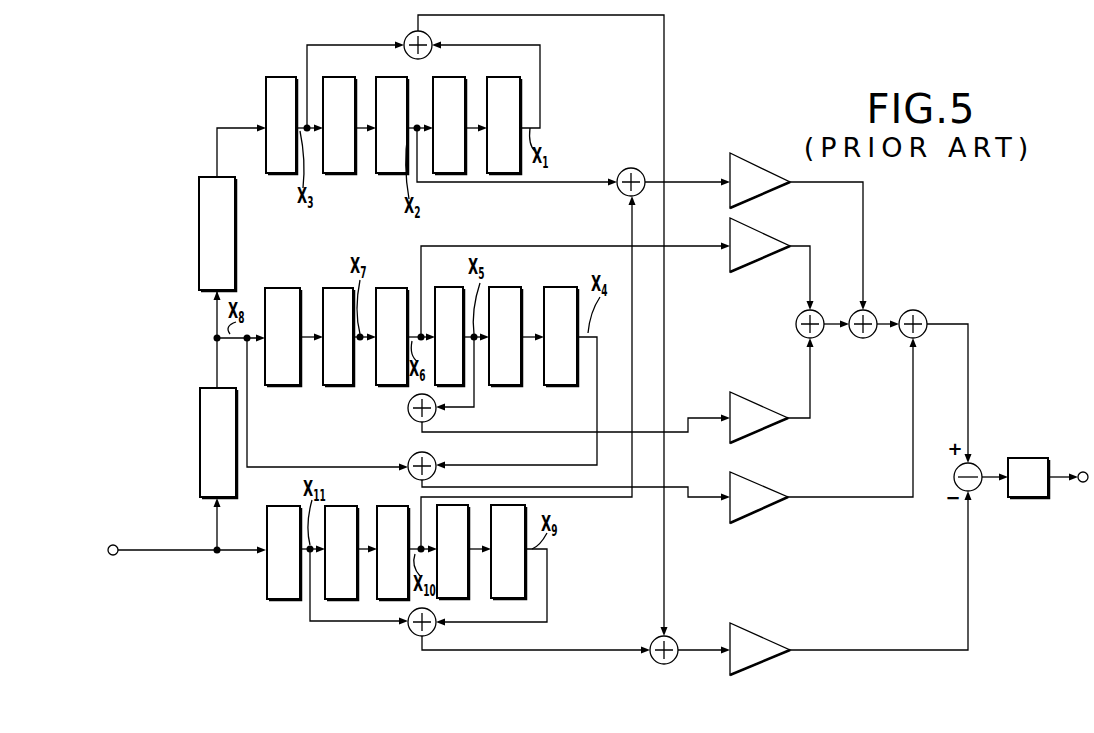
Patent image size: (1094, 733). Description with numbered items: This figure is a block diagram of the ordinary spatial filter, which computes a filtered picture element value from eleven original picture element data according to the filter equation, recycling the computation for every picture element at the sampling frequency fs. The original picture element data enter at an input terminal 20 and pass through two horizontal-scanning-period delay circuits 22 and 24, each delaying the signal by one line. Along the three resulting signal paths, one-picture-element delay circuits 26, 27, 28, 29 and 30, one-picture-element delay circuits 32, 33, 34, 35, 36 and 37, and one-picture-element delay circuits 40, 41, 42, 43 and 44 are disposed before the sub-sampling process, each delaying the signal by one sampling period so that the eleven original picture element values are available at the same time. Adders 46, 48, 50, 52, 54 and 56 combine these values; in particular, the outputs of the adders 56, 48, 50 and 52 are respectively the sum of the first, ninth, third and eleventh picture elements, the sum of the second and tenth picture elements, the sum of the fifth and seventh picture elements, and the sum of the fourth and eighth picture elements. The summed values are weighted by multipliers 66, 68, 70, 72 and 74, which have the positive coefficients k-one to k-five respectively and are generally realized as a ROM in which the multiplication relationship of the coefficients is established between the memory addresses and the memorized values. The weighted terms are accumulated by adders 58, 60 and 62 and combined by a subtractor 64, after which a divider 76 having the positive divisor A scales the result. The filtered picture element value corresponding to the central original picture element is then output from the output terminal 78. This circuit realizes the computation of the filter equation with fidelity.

The input terminal 20 is at (113, 556).
The 1-line delay circuit 22 is at (200, 441).
The 1-line delay circuit 24 is at (199, 228).
The 1-picture element delay circuit 26 is at (282, 173).
The 1-picture element delay circuit 27 is at (338, 173).
The 1-picture element delay circuit 28 is at (390, 173).
The 1-picture element delay circuit 29 is at (452, 173).
The 1-picture element delay circuit 30 is at (508, 173).
The 1-picture element delay circuit 32 is at (278, 288).
The 1-picture element delay circuit 33 is at (334, 288).
The 1-picture element delay circuit 34 is at (389, 288).
The 1-picture element delay circuit 35 is at (446, 287).
The 1-picture element delay circuit 36 is at (504, 287).
The 1-picture element delay circuit 37 is at (559, 287).
The 1-picture element delay circuit 40 is at (275, 600).
The 1-picture element delay circuit 41 is at (340, 600).
The 1-picture element delay circuit 42 is at (388, 600).
The 1-picture element delay circuit 43 is at (460, 598).
The 1-picture element delay circuit 44 is at (510, 598).
The adder 46 is at (408, 33).
The adder 48 is at (629, 168).
The adder 50 is at (411, 420).
The adder 52 is at (436, 457).
The adder 54 is at (412, 635).
The adder 56 is at (675, 637).
The adder 58 is at (797, 322).
The adder 60 is at (862, 339).
The adder 62 is at (923, 311).
The subtractor 64 is at (982, 463).
The multiplier 66 is at (763, 636).
The multiplier 68 is at (758, 164).
The multiplier 70 is at (758, 404).
The multiplier 72 is at (767, 484).
The multiplier 74 is at (757, 232).
The absolute value circuit 76 is at (1030, 498).
The output terminal 78 is at (1080, 486).